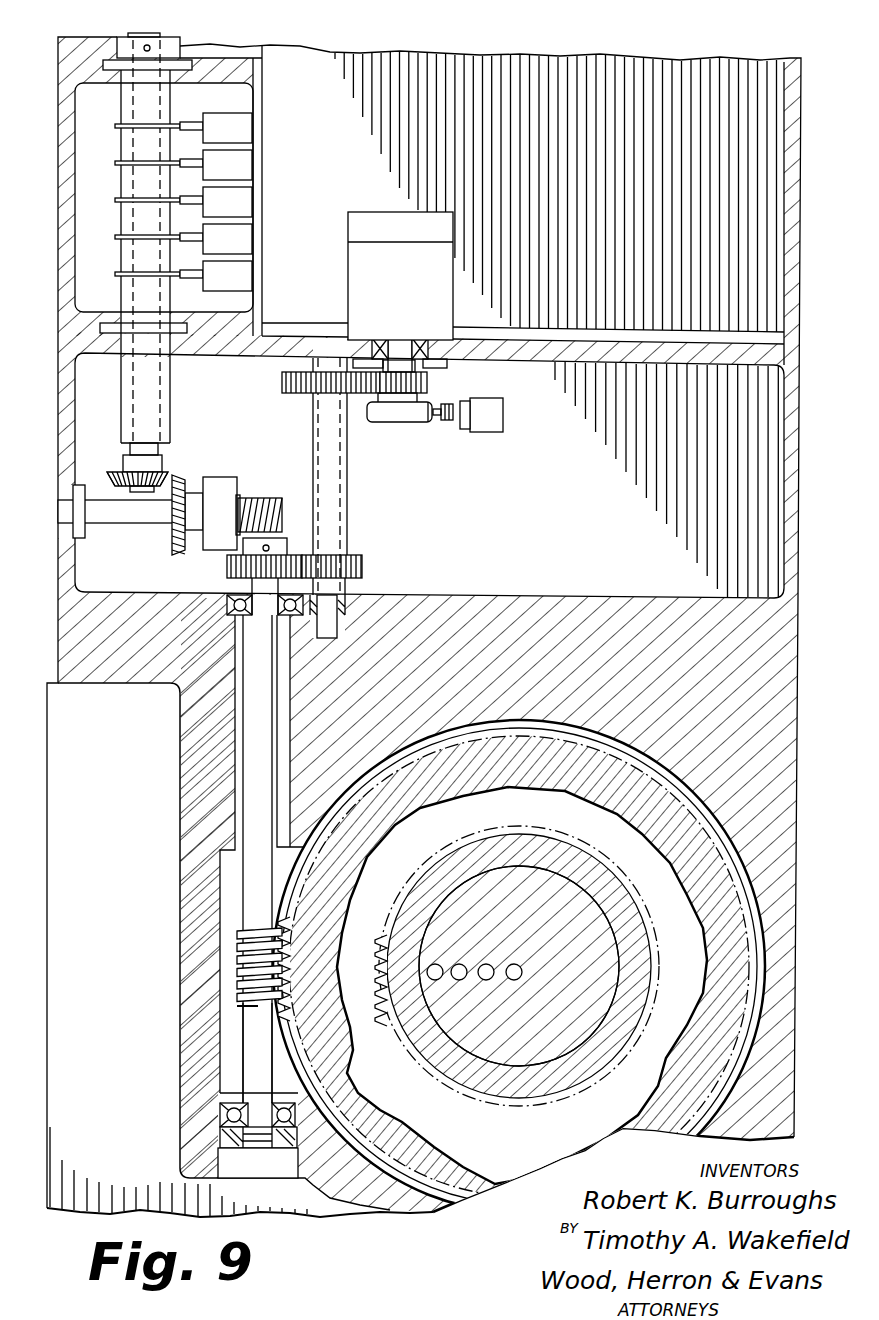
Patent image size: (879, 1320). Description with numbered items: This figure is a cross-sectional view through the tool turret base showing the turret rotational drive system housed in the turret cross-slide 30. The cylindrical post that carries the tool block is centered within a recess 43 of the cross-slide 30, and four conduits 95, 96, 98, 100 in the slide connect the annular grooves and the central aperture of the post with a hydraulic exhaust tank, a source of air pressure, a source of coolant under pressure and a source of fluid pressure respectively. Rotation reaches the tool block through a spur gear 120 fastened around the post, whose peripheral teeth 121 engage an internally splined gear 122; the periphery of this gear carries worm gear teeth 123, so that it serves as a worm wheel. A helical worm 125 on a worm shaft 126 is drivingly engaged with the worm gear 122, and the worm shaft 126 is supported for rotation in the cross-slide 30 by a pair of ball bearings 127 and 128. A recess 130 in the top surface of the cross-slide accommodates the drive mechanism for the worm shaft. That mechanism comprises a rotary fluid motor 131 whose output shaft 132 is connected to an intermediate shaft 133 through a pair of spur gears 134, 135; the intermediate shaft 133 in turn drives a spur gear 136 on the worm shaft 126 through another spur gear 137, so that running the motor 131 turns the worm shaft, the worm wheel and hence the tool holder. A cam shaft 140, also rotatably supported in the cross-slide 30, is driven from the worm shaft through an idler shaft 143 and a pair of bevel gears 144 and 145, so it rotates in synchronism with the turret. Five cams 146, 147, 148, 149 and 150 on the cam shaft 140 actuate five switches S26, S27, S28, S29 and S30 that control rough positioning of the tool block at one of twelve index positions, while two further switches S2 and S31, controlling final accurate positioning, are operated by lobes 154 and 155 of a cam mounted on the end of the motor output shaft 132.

The cross-slide 30 is at (775, 783).
The recess 43 is at (556, 966).
The spur gear 120 is at (436, 885).
The peripheral teeth 121 is at (378, 964).
The internally splined gear 122 is at (291, 910).
The worm gear teeth 123 is at (271, 1013).
The helical worm 125 is at (259, 926).
The worm shaft 126 is at (253, 826).
The ball bearing 127 is at (257, 612).
The ball bearing 128 is at (251, 1102).
The recess 130 is at (745, 502).
The rotary fluid motor 131 is at (400, 276).
The output shaft 132 is at (403, 338).
The intermediate shaft 133 is at (348, 478).
The spur gear 134 is at (428, 383).
The spur gear 135 is at (283, 391).
The spur gear 136 is at (227, 573).
The spur gear 137 is at (362, 568).
The cam shaft 140 is at (170, 391).
The idler shaft 143 is at (128, 518).
The bevel gear 144 is at (175, 550).
The bevel gear 145 is at (176, 480).
The cam 146 is at (115, 126).
The cam 147 is at (115, 163).
The cam 148 is at (115, 200).
The cam 149 is at (115, 237).
The cam 150 is at (115, 274).
The cam lobe 154 is at (437, 421).
The cam lobe 155 is at (367, 414).
The conduit 95 is at (437, 964).
The conduit 96 is at (462, 964).
The conduit 98 is at (489, 964).
The conduit 100 is at (516, 964).
The switch S2 is at (505, 406).
The switch S31 is at (505, 421).
The switch S26 is at (227, 128).
The switch S27 is at (227, 165).
The switch S28 is at (227, 202).
The switch S29 is at (227, 239).
The switch S30 is at (227, 276).